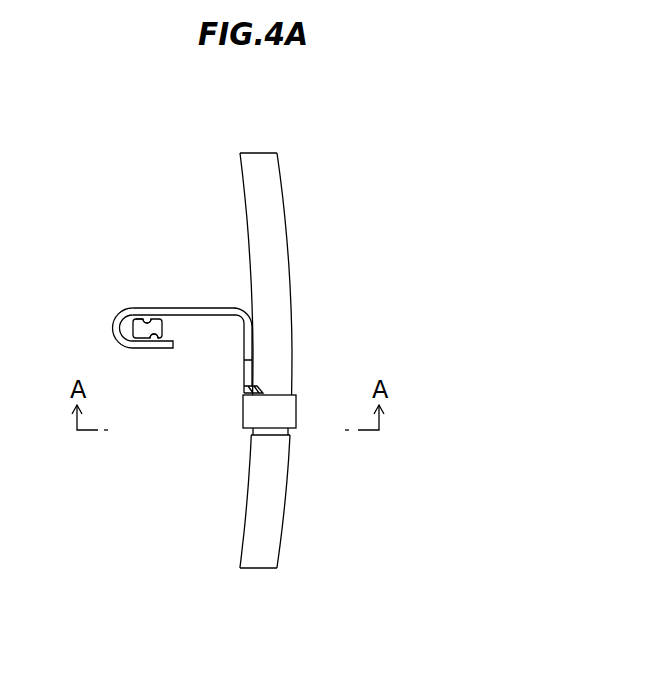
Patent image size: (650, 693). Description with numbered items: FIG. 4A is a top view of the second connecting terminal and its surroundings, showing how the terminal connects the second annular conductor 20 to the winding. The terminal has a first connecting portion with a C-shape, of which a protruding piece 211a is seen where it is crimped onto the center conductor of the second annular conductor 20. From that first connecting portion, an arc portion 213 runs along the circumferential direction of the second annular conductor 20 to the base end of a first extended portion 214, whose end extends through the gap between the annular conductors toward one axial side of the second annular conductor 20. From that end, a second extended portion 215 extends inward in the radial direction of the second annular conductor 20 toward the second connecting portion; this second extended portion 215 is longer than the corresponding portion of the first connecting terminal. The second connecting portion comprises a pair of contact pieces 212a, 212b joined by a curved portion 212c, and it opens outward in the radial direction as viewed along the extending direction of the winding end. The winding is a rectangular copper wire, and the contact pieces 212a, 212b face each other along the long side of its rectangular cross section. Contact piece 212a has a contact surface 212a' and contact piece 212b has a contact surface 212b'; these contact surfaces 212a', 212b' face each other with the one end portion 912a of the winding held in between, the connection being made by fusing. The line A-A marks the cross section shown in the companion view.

The second annular conductor 20 is at (280, 577).
The second extended portion 215 is at (190, 315).
The first extended portion 214 is at (248, 340).
The arc portion 213 is at (248, 375).
The protruding piece 211a is at (288, 413).
The curved portion 212c is at (114, 318).
The one end portion of the winding 912a is at (130, 333).
The contact piece 212a is at (152, 272).
The contact surface 212a' is at (103, 283).
The contact piece 212b is at (132, 375).
The contact surface 212b' is at (192, 362).